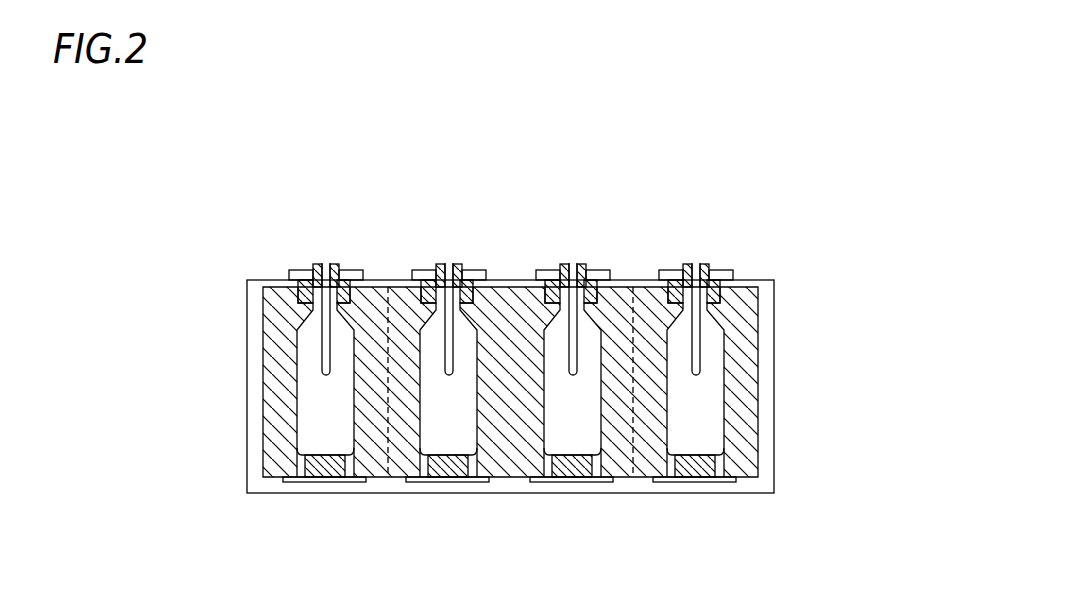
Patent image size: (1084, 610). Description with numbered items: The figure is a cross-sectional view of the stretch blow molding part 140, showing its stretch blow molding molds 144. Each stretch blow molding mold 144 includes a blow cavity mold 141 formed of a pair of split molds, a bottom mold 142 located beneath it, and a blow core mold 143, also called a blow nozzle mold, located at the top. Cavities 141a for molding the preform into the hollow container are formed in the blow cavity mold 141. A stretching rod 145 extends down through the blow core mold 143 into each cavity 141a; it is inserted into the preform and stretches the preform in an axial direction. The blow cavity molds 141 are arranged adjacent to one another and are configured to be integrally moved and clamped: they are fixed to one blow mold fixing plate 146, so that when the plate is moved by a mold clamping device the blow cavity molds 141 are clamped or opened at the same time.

The stretch blow molding part 140 is at (741, 147).
The blow cavity mold 141 is at (745, 331).
The cavity 141a is at (710, 432).
The bottom mold 142 is at (703, 479).
The blow core mold 143 is at (685, 265).
The stretch blow molding mold 144 is at (743, 255).
The stretching rod 145 is at (323, 362).
The blow mold fixing plate 146 is at (762, 488).